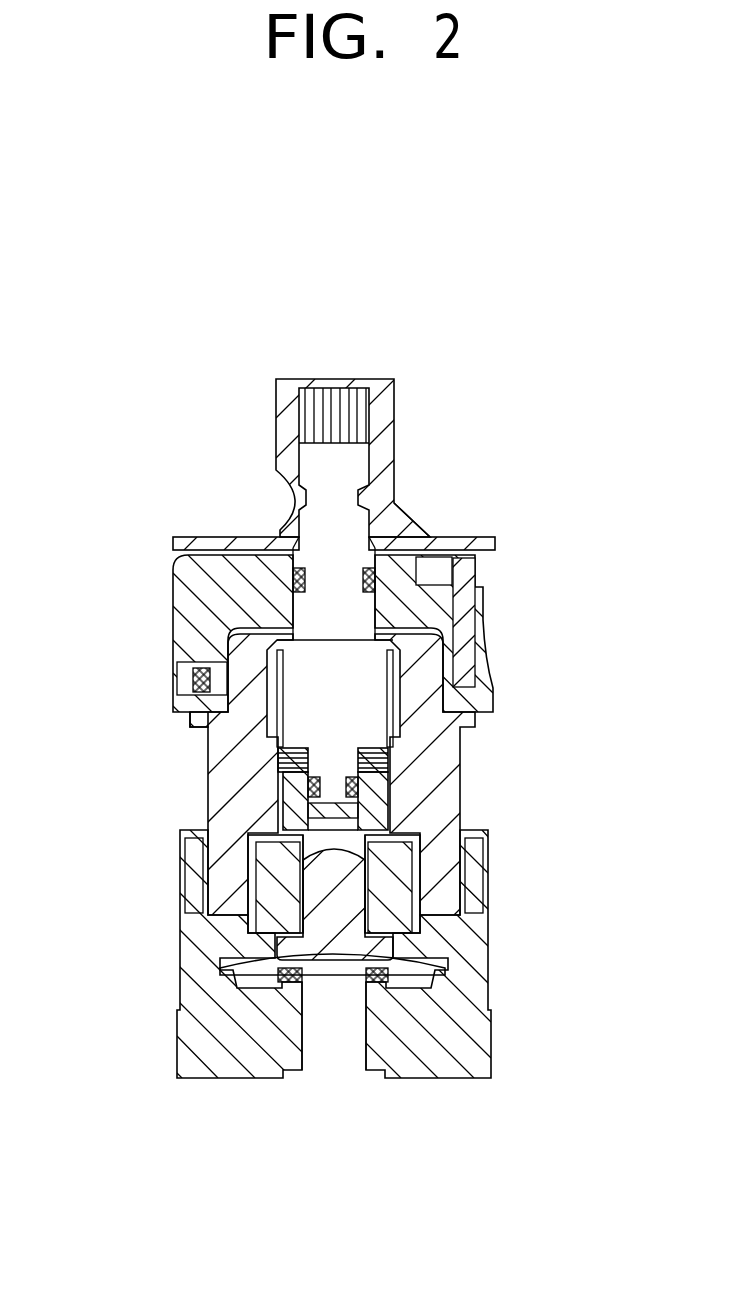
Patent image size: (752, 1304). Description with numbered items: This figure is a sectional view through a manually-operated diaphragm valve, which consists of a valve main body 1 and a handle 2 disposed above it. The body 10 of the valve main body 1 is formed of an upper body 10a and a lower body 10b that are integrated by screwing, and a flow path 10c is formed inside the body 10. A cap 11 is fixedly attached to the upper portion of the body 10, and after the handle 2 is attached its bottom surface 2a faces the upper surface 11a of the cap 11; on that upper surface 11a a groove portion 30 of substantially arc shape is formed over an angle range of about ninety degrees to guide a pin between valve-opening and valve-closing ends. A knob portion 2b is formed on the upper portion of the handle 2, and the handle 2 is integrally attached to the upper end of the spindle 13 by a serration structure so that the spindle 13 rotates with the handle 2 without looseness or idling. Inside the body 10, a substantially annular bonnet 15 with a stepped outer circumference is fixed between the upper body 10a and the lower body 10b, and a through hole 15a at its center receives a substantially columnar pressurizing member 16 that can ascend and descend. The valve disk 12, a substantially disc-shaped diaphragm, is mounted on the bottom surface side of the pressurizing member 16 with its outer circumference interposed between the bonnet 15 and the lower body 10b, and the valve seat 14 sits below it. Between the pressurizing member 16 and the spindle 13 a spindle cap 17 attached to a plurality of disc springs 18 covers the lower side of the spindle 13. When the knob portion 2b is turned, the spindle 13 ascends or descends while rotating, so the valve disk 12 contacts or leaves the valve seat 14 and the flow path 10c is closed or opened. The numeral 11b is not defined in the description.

The valve main body 1 is at (205, 786).
The handle 2 is at (394, 533).
The bottom surface 2a is at (183, 570).
The knob portion 2b is at (288, 431).
The body 10 is at (401, 957).
The upper body 10a is at (445, 798).
The lower body 10b is at (480, 888).
The flow path 10c is at (362, 1028).
The cap 11 is at (448, 608).
The upper surface 11a is at (400, 526).
The lever support block 11b is at (172, 633).
The valve disk 12 is at (395, 988).
The spindle 13 is at (317, 607).
The valve seat 14 is at (292, 974).
The bonnet 15 is at (300, 888).
The through hole 15a is at (345, 880).
The pressurizing member 16 is at (345, 912).
The spindle cap 17 is at (395, 797).
The disc spring 18 is at (300, 790).
The groove portion 30 is at (440, 570).